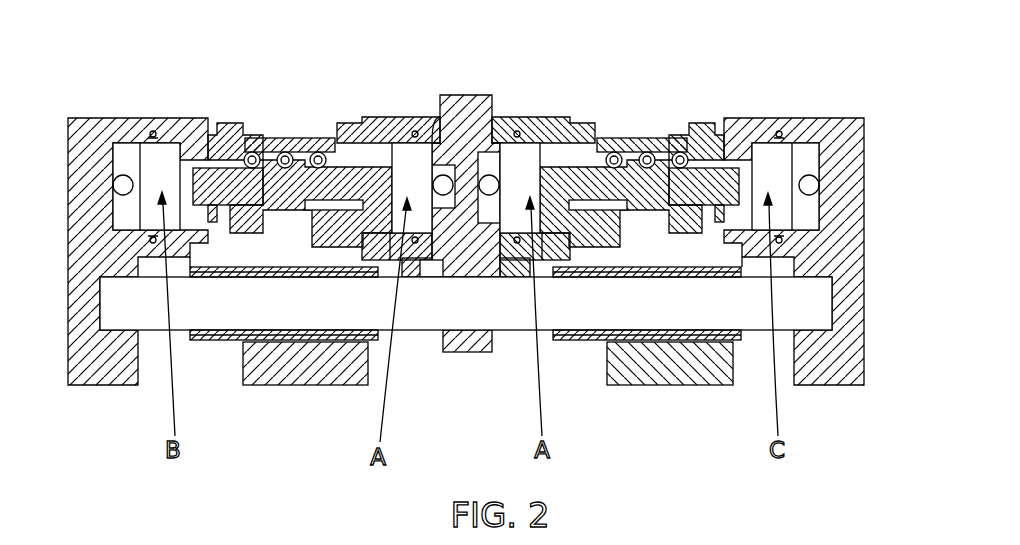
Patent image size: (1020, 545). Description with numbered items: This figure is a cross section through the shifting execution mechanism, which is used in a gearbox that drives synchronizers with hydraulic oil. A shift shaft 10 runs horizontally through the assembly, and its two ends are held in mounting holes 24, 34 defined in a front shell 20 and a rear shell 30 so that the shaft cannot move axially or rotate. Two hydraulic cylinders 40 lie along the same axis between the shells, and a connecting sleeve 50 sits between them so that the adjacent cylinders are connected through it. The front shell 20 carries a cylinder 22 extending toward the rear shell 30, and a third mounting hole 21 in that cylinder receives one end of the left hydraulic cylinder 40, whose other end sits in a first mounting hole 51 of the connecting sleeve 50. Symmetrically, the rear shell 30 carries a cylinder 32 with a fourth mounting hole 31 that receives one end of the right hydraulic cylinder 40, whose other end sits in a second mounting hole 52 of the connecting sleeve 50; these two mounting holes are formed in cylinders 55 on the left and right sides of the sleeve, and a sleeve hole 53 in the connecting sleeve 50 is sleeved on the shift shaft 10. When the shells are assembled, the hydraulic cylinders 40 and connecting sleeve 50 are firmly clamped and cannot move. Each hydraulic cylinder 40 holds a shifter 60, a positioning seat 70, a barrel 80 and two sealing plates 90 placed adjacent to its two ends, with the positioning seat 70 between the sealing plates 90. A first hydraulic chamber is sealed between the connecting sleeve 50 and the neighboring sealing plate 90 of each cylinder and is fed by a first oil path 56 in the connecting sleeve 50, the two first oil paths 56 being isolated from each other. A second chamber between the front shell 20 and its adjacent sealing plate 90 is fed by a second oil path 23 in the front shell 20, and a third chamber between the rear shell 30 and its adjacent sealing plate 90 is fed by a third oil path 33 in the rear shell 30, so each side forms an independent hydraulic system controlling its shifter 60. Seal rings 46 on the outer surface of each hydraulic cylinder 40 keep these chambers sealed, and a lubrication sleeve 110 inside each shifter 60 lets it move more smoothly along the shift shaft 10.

The shift shaft 10 is at (513, 303).
The front shell 20 is at (83, 362).
The third mounting hole 21 is at (124, 176).
The cylinder 22 is at (193, 128).
The second oil path 23 is at (86, 128).
The mounting hole 24 is at (123, 352).
The rear shell 30 is at (847, 348).
The fourth mounting hole 31 is at (798, 133).
The cylinder 32 is at (755, 122).
The third oil path 33 is at (813, 178).
The mounting hole 34 is at (815, 348).
The hydraulic cylinder 40 is at (235, 128).
The seal ring 46 is at (155, 130).
The connecting sleeve 50 is at (467, 236).
The first mounting hole 51 is at (452, 130).
The second mounting hole 52 is at (500, 115).
The sleeve hole 53 is at (458, 268).
The cylinder 55 is at (405, 123).
The first oil path 56 is at (477, 100).
The shifter 60 is at (285, 236).
The positioning seat 70 is at (290, 136).
The barrel 80 is at (226, 228).
The sealing plate 90 is at (384, 150).
The lubrication sleeve 110 is at (710, 333).